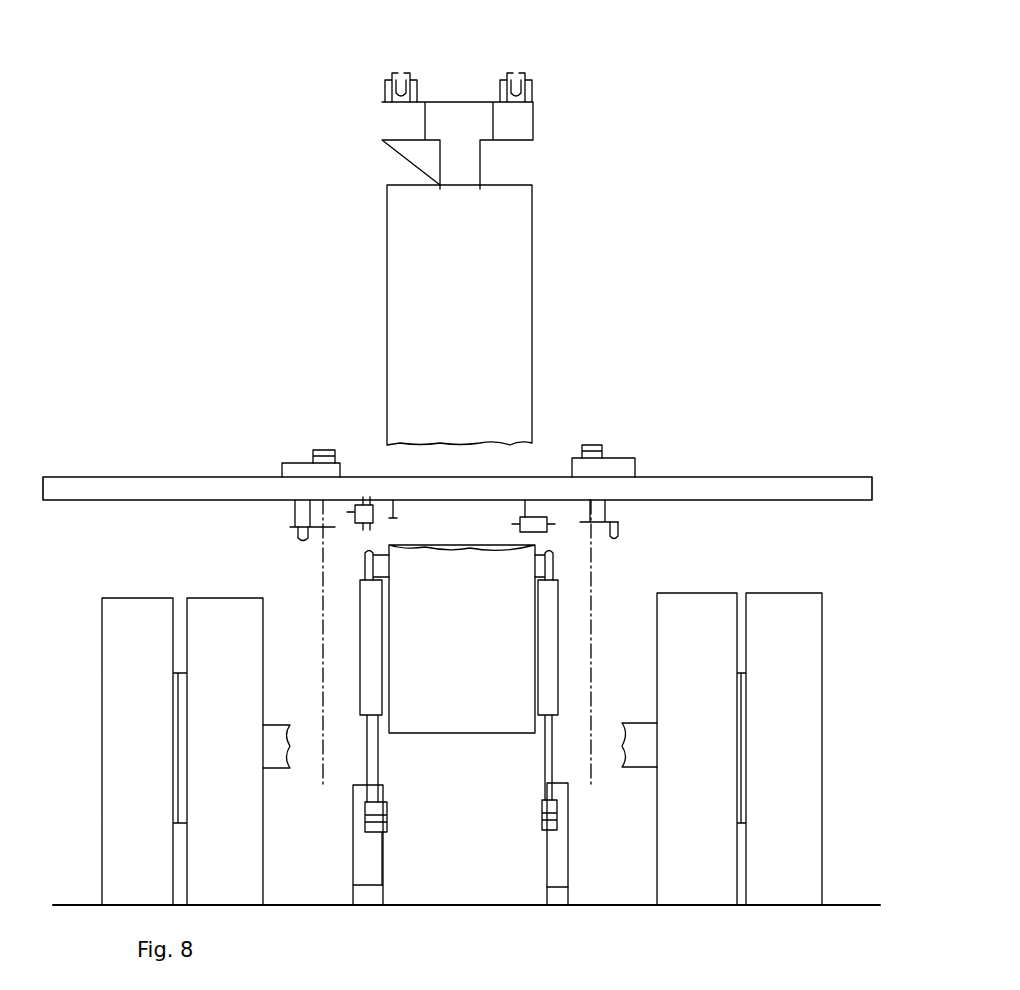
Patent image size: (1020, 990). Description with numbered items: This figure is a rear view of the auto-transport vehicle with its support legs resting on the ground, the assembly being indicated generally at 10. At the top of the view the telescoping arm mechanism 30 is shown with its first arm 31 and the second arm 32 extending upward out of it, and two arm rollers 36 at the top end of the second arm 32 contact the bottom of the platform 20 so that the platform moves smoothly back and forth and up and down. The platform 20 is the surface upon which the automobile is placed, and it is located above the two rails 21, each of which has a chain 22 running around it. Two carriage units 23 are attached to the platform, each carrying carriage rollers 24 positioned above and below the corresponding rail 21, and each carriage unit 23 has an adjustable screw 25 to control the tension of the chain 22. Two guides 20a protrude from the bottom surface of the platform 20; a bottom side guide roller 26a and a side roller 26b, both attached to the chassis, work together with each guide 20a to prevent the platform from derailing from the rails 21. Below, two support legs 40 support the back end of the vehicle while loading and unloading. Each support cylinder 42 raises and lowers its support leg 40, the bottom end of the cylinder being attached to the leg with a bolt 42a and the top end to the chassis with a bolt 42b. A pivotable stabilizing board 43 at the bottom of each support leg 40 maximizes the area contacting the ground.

The workpiece fixing apparatus 10 is at (546, 440).
The platform 20 is at (737, 477).
The guides 20a is at (395, 513).
The rails 21 is at (306, 542).
The chain 22 is at (320, 577).
The carriage units 23 is at (293, 467).
The carriage rollers 24 is at (297, 530).
The adjustable screw 25 is at (320, 450).
The bottom side guide roller 26a is at (530, 517).
The side roller 26b is at (350, 510).
The telescoping arm mechanism 30 is at (462, 238).
The first arm 31 is at (502, 260).
The second arm 32 is at (463, 163).
The arm rollers 36 is at (400, 76).
The support legs 40 is at (463, 871).
The support cylinder 42 is at (461, 747).
The bolt 42a is at (387, 820).
The bolt 42b is at (362, 562).
The pivotable stabilizing board 43 is at (553, 897).